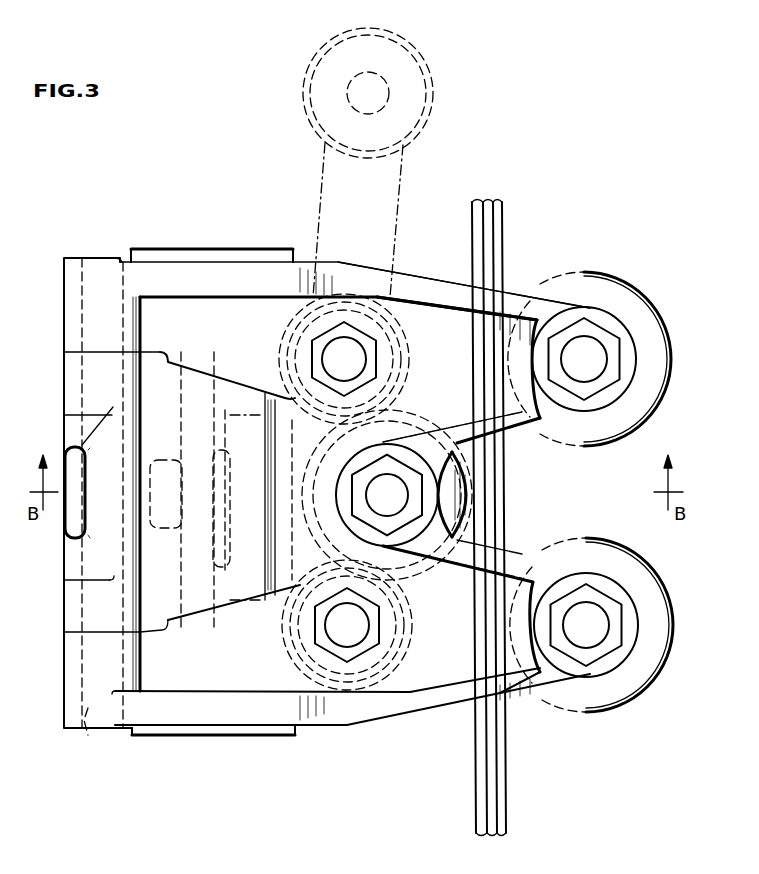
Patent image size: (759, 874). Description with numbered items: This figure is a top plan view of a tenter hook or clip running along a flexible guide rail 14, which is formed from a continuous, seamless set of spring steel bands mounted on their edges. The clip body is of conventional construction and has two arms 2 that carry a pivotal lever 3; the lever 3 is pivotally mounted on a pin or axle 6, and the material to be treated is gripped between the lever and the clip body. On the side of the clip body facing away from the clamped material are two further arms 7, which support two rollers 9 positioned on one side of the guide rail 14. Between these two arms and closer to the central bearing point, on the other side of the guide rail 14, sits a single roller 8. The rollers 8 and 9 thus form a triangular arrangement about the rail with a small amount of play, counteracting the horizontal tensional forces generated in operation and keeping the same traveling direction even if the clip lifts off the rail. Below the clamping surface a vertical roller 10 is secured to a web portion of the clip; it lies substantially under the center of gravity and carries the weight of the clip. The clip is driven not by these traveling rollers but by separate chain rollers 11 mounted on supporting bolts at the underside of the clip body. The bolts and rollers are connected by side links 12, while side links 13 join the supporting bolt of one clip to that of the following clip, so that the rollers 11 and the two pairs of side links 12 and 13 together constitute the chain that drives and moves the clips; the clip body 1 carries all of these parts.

The frame plate 1 is at (262, 680).
The arms 2 is at (158, 272).
The pivotal lever 3 is at (70, 594).
The pin or axle 6 is at (90, 735).
The arms 7 is at (512, 300).
The single roller 8 is at (458, 500).
The rollers 9 is at (600, 300).
The vertical roller 10 is at (213, 440).
The rollers 11 is at (408, 305).
The side links 12 is at (408, 424).
The side links 13 is at (325, 185).
The guide rail 14 is at (488, 202).